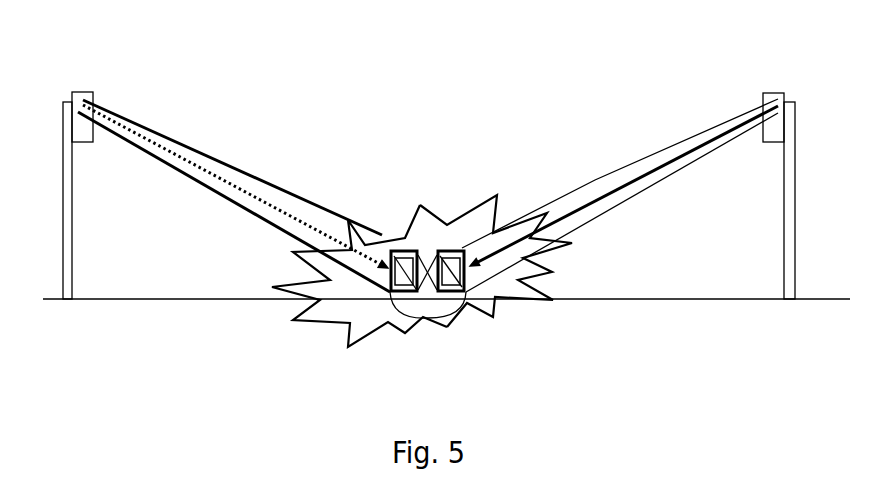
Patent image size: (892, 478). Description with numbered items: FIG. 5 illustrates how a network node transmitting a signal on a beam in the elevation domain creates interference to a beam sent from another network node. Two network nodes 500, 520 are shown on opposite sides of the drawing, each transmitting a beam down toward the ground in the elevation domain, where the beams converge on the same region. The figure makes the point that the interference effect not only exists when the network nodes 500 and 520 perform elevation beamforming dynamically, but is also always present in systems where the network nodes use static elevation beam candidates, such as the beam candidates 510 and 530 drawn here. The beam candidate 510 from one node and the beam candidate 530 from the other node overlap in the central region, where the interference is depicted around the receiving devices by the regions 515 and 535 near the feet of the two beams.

The network node 500 is at (84, 92).
The beam candidate 510 is at (252, 176).
The first interference region 515 is at (332, 277).
The network node 520 is at (766, 92).
The beam candidate 530 is at (585, 192).
The second interference region 535 is at (517, 269).